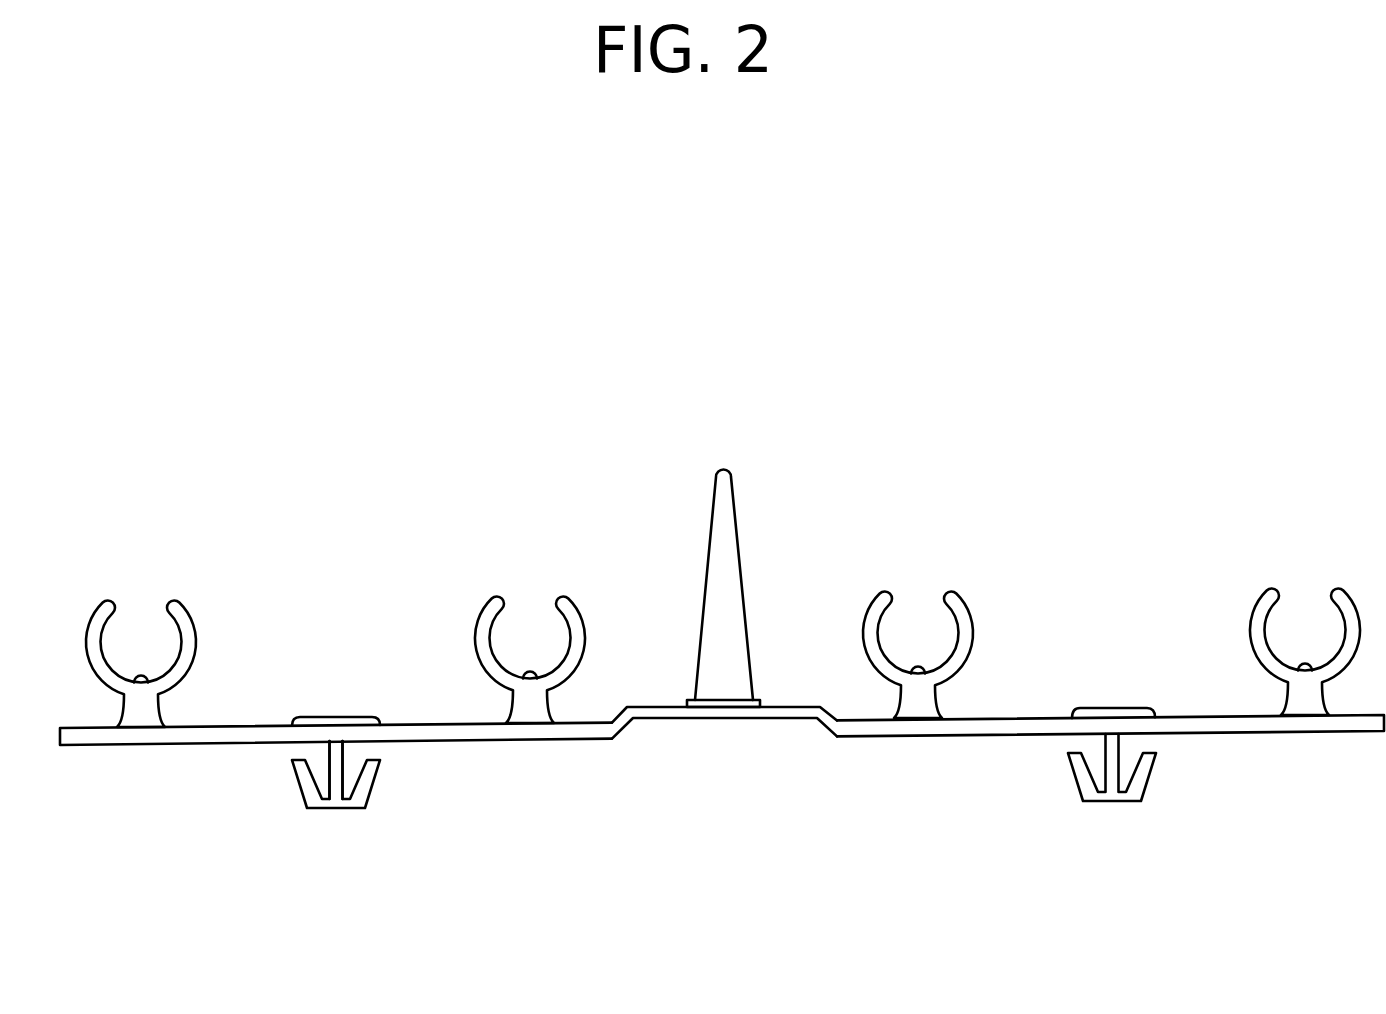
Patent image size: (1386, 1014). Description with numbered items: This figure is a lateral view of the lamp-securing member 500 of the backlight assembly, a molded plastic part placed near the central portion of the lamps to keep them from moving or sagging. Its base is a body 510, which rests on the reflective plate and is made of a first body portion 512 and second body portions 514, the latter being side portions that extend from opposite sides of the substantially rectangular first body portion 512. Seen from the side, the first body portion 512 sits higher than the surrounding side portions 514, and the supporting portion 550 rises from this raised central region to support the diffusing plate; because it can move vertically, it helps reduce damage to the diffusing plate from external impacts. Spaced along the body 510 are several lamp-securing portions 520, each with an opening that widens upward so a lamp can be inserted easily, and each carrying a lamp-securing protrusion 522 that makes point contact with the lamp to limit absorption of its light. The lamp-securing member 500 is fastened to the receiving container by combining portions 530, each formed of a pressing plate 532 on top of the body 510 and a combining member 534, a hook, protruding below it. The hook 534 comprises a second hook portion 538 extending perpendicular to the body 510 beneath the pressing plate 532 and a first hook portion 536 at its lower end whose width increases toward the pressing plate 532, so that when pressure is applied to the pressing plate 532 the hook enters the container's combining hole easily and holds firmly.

The lamp-securing member 500 is at (897, 290).
The body 510 is at (1225, 723).
The first body portion 512 is at (638, 717).
The second body portion 514 is at (153, 745).
The lamp-securing portion 520 is at (982, 548).
The lamp-securing protrusion 522 is at (918, 672).
The combining portion 530 is at (1140, 698).
The pressing plate 532 is at (1097, 710).
The combining member 534 is at (1112, 802).
The first hook portion 536 is at (367, 782).
The second hook portion 538 is at (330, 773).
The supporting portion 550 is at (723, 470).